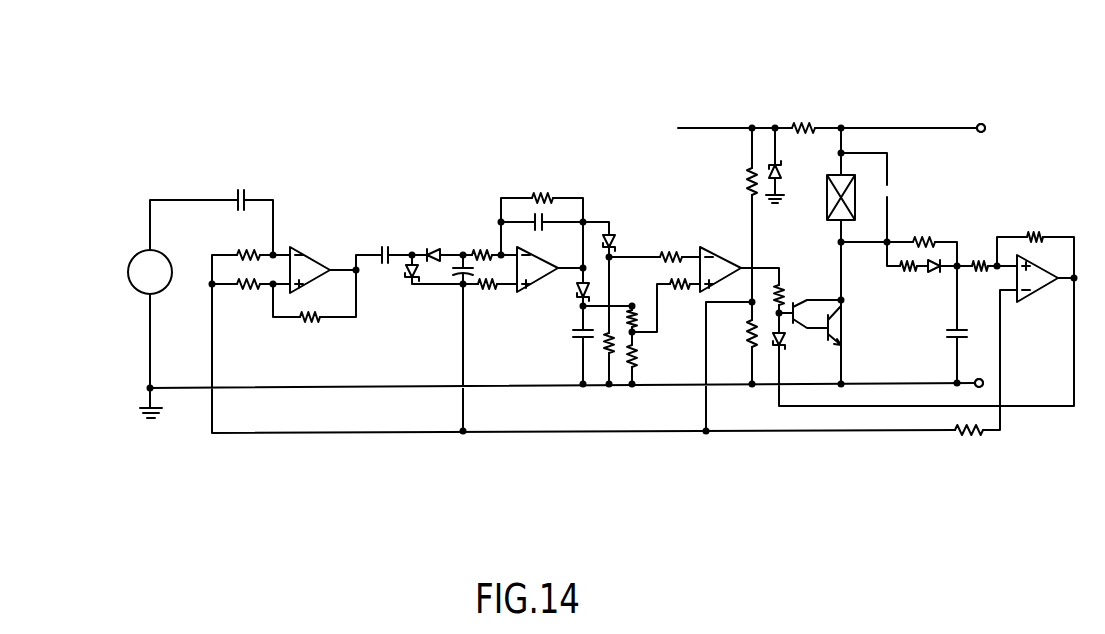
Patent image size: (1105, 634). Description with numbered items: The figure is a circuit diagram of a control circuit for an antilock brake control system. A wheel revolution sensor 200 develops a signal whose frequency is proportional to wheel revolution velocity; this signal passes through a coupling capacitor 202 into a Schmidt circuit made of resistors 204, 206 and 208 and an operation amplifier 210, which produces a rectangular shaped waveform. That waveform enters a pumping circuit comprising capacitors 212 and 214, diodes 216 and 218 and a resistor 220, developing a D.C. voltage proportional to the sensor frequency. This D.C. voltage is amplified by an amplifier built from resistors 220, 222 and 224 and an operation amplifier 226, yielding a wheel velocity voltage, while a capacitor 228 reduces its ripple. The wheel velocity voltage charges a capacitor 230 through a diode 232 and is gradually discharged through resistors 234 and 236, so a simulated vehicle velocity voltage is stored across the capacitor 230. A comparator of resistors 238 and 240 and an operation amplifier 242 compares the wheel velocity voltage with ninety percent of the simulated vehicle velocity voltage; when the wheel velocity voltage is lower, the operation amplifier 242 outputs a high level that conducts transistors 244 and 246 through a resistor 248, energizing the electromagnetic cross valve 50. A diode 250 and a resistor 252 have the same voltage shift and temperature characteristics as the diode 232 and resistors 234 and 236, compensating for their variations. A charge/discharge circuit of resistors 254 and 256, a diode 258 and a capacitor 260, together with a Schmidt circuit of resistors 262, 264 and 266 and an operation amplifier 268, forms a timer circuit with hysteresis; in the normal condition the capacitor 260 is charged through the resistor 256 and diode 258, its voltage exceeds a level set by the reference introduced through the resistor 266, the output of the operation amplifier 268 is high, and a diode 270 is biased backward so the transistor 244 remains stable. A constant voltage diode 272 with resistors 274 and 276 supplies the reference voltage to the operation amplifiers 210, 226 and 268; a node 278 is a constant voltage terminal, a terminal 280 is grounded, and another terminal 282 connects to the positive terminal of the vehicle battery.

The wheel revolution sensor 200 is at (140, 270).
The coupling capacitor 202 is at (240, 189).
The resistor 204 is at (238, 248).
The resistor 206 is at (245, 294).
The resistor 208 is at (311, 327).
The operation amplifier 210 is at (306, 250).
The capacitor 212 is at (385, 246).
The capacitor 214 is at (457, 281).
The diode 216 is at (409, 273).
The diode 218 is at (431, 248).
The resistor 220 is at (481, 248).
The resistor 222 is at (486, 292).
The resistor 224 is at (540, 192).
The operation amplifier 226 is at (533, 294).
The capacitor 228 is at (547, 215).
The capacitor 230 is at (576, 339).
The diode 232 is at (576, 292).
The resistor 234 is at (641, 321).
The resistor 236 is at (638, 359).
The resistor 238 is at (669, 252).
The resistor 240 is at (681, 290).
The operation amplifier 242 is at (719, 250).
The transistor 244 is at (801, 326).
The transistor 246 is at (843, 332).
The resistor 248 is at (786, 290).
The diode 250 is at (612, 234).
The resistor 252 is at (601, 352).
The resistor 254 is at (925, 240).
The resistor 256 is at (910, 273).
The diode 258 is at (935, 274).
The capacitor 260 is at (957, 344).
The resistor 262 is at (981, 258).
The resistor 264 is at (1035, 236).
The resistor 266 is at (976, 441).
The operation amplifier 268 is at (1035, 284).
The diode 270 is at (786, 345).
The constant voltage diode 272 is at (783, 168).
The resistor 274 is at (746, 188).
The resistor 276 is at (747, 343).
The node 278 is at (753, 126).
The terminal 280 is at (985, 384).
The terminal 282 is at (982, 124).
The electromagnetic cross valve 50 is at (842, 186).